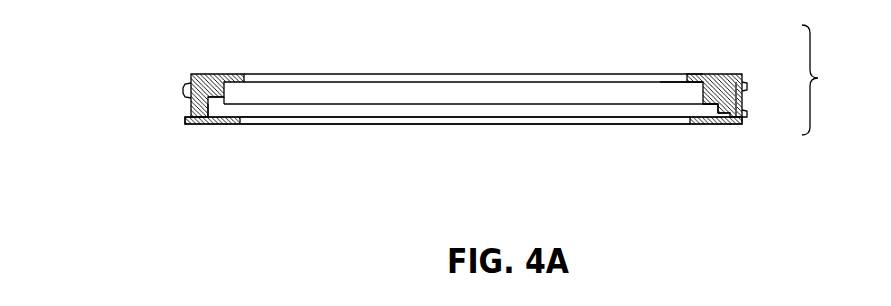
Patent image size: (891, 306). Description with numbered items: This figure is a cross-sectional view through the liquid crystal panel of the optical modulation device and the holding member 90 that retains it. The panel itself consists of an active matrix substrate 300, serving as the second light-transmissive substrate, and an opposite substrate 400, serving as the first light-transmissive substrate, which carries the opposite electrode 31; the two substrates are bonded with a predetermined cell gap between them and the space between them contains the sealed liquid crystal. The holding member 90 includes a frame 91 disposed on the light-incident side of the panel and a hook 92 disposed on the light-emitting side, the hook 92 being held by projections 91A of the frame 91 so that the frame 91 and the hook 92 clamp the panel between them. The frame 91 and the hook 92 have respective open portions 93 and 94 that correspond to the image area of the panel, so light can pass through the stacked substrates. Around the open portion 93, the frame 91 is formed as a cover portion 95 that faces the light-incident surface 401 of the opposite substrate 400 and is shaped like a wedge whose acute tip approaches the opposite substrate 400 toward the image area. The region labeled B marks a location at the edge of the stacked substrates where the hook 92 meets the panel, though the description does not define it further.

The holding member 90 is at (822, 80).
The frame 91 is at (742, 78).
The projections 91A is at (183, 92).
The hook 92 is at (745, 121).
The open portion 93 is at (633, 78).
The open portion 94 is at (253, 121).
The cover portion 95 is at (698, 78).
The opposite electrode 31 is at (666, 85).
The active matrix substrate 300 is at (594, 108).
The opposite substrate 400 is at (586, 83).
The light-incident surface 401 is at (486, 85).
The bonding portion B is at (708, 114).